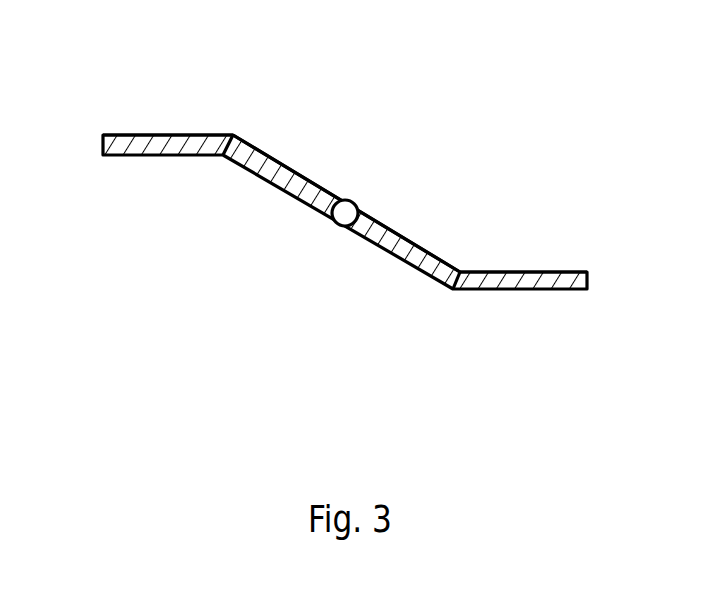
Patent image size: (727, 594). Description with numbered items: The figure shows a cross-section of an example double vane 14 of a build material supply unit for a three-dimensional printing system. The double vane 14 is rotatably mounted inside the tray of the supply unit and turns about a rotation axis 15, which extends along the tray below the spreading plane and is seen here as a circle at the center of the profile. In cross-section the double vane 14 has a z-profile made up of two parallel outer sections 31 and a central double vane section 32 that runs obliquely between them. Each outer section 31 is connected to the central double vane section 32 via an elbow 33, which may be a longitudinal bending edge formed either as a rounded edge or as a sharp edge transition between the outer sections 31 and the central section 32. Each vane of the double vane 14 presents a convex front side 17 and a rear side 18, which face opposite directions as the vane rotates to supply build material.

The double vane 14 is at (69, 86).
The rotation axis 15 is at (337, 241).
The convex front side 17 is at (465, 318).
The rear side 18 is at (476, 243).
The outer section 31 is at (175, 118).
The central double vane section 32 is at (336, 170).
The elbow 33 is at (223, 181).